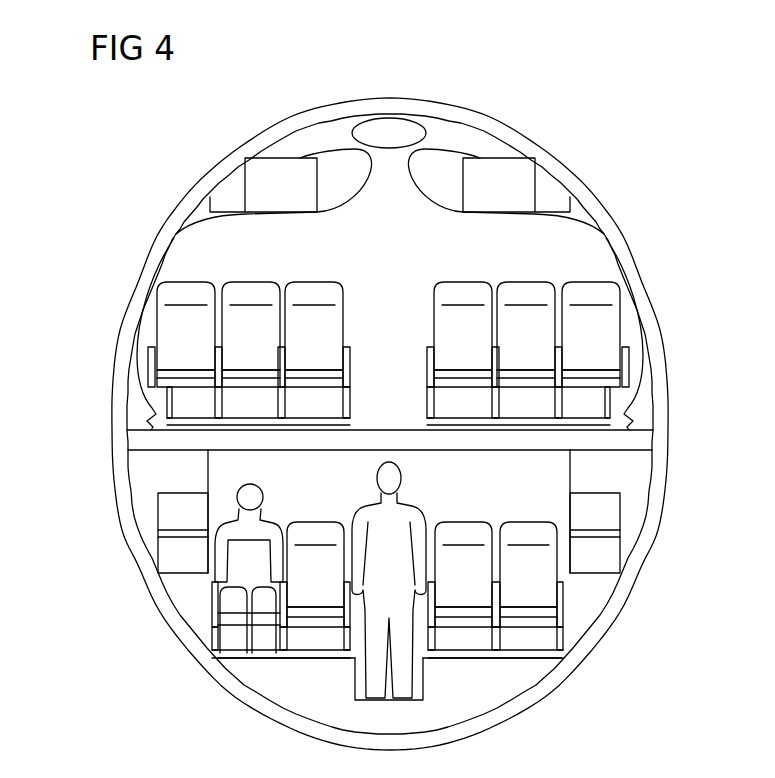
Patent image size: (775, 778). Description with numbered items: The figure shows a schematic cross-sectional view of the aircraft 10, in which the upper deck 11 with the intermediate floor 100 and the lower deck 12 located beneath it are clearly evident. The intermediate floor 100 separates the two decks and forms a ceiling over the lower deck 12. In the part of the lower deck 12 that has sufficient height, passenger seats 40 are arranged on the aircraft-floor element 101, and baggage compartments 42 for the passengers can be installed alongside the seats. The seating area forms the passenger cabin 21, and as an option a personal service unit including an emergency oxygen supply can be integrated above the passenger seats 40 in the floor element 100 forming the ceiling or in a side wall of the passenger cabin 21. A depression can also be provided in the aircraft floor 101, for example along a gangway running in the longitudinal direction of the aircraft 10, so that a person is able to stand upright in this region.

The aircraft 10 is at (541, 145).
The upper deck 11 is at (616, 200).
The lower deck 12 is at (679, 479).
The intermediate floor 100 is at (633, 442).
The aircraft-floor element 101 is at (533, 644).
The passenger seats 40 is at (543, 593).
The baggage compartments 42 is at (167, 518).
The passenger cabin 21 is at (228, 638).